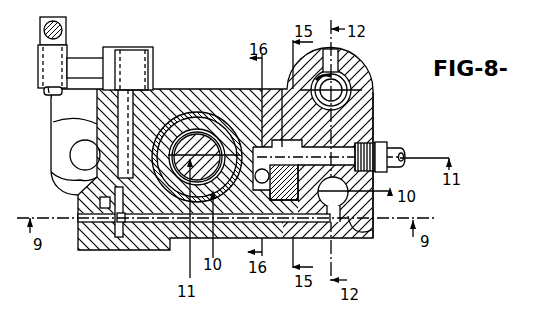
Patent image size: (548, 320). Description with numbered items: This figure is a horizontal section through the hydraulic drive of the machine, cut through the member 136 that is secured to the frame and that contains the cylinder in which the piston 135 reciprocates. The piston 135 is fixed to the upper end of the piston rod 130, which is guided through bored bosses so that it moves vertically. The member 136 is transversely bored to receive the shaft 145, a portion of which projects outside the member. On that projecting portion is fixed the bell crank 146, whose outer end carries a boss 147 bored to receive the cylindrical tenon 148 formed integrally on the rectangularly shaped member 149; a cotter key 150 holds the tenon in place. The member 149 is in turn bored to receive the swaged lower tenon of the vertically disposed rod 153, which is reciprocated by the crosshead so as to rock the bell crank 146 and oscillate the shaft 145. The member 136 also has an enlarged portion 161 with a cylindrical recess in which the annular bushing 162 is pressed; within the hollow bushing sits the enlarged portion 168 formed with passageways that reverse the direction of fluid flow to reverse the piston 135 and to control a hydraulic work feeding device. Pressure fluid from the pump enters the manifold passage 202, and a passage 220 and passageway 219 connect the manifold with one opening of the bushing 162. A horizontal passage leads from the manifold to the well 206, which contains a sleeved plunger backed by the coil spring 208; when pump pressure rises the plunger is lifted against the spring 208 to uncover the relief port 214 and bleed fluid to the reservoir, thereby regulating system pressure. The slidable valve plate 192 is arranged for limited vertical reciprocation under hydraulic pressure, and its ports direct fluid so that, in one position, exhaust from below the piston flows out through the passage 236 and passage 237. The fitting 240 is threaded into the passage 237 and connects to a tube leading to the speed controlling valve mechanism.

The piston rod 130 is at (184, 137).
The piston 135 is at (203, 112).
The member 136 is at (233, 98).
The shaft 145 is at (135, 100).
The bell crank 146 is at (85, 68).
The boss 147 is at (40, 77).
The cylindrical tenon 148 is at (43, 64).
The rectangularly shaped member 149 is at (66, 28).
The cotter key 150 is at (48, 88).
The vertically disposed rod 153 is at (67, 33).
The enlarged portion 161 is at (78, 200).
The annular bushing 162 is at (97, 232).
The enlarged portion 168 is at (119, 238).
The valve plate 192 is at (272, 138).
The manifold passage 202 is at (373, 178).
The well 206 is at (350, 78).
The coil spring 208 is at (338, 97).
The relief port 214 is at (334, 64).
The passageway 219 is at (240, 240).
The passage 220 is at (372, 212).
The passage 236 is at (268, 210).
The passage 237 is at (340, 152).
The fitting 240 is at (393, 145).